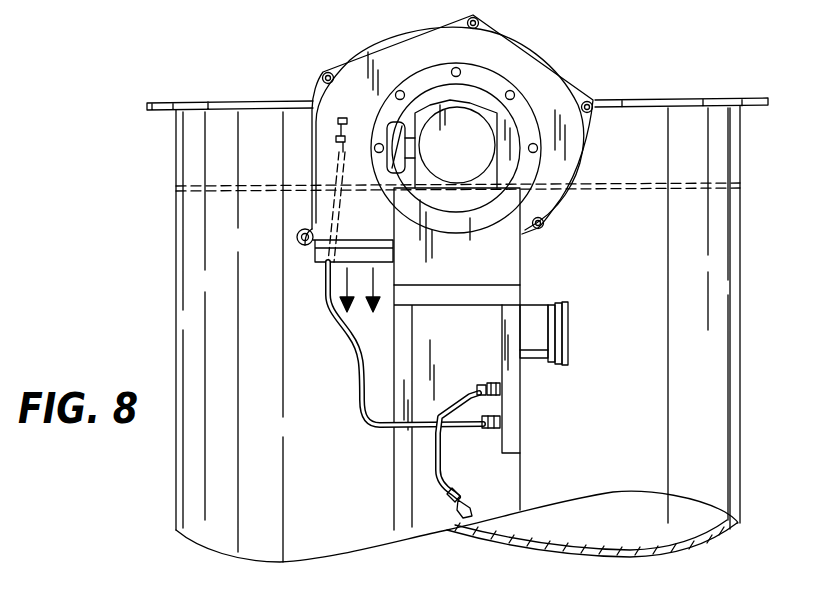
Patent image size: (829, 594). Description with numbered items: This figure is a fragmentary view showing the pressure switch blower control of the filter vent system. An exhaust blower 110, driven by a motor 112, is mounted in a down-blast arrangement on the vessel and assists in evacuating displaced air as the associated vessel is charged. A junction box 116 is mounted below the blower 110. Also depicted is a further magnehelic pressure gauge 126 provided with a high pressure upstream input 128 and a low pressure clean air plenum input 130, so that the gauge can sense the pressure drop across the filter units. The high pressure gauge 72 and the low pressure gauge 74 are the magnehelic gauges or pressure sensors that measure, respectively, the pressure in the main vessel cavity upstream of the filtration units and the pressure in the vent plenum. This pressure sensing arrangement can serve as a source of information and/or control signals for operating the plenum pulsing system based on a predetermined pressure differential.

The exhaust blower 110 is at (512, 63).
The motor 112 is at (473, 161).
The junction box 116 is at (527, 322).
The magnehelic pressure gauge 126 is at (525, 392).
The high pressure upstream input 128 is at (437, 448).
The low pressure clean air plenum input 130 is at (327, 302).
The high pressure gauge 72 is at (478, 386).
The low pressure gauge 74 is at (487, 428).